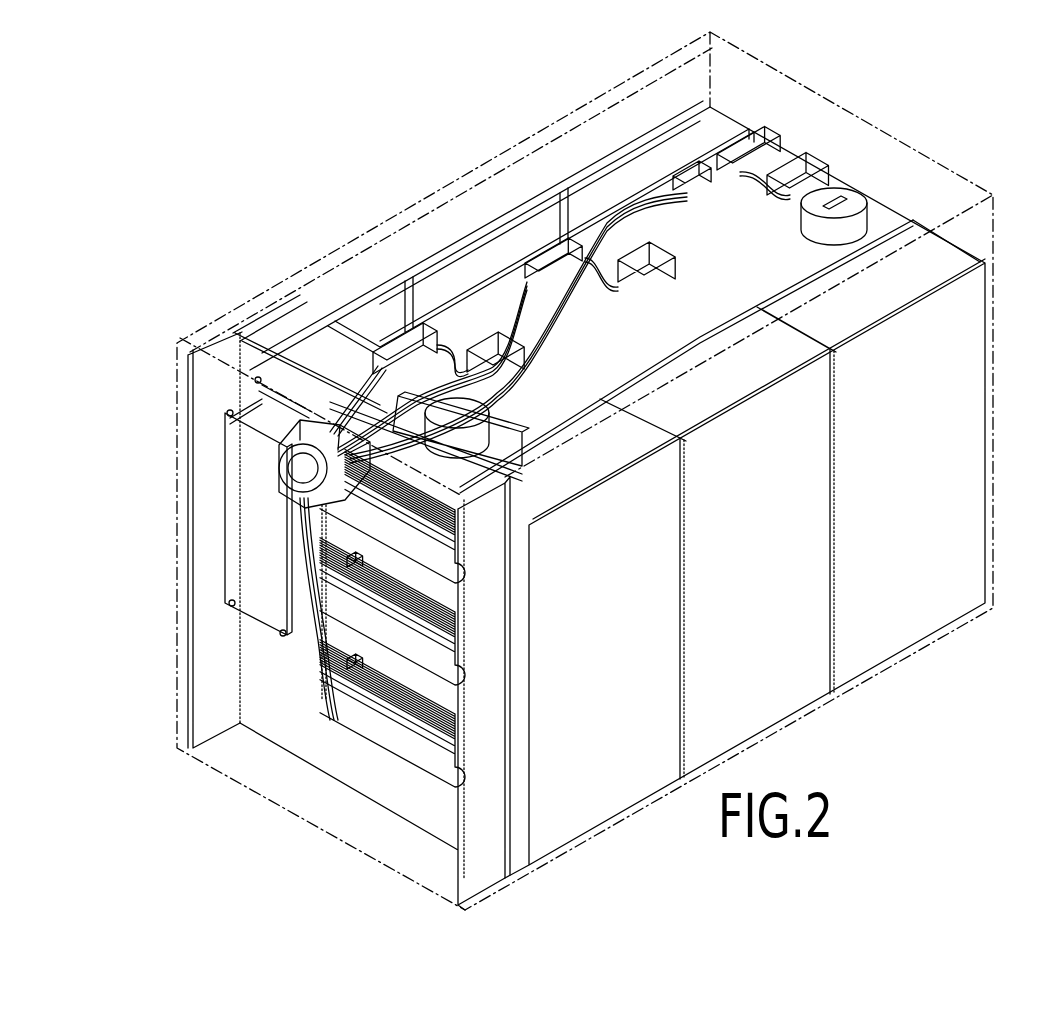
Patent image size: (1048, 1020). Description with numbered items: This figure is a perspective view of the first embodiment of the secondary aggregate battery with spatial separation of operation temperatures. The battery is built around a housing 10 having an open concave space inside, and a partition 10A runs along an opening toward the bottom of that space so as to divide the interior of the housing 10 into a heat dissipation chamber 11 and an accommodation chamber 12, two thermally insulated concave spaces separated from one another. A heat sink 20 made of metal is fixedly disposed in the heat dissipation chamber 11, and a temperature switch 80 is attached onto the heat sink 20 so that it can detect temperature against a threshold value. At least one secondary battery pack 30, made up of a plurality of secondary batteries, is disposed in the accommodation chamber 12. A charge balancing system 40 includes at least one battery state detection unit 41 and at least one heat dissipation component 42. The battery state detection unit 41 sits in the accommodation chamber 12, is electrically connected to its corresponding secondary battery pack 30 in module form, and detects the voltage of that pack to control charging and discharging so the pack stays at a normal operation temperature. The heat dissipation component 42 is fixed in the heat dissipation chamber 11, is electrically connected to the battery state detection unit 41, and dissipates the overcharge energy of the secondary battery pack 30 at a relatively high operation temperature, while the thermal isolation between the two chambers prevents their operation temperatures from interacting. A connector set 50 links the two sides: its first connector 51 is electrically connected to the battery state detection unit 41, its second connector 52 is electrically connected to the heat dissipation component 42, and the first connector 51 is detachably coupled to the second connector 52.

The housing 10 is at (410, 200).
The partition 10A is at (268, 310).
The heat dissipation chamber 11 is at (205, 340).
The accommodation chamber 12 is at (590, 162).
The heat sink 20 is at (222, 330).
The secondary battery pack 30 is at (380, 300).
The charge balancing system 40 is at (975, 112).
The battery state detection unit 41 is at (780, 130).
The heat dissipation component 42 is at (385, 726).
The connector set 50 is at (760, 242).
The first connector 51 is at (720, 177).
The second connector 52 is at (700, 196).
The temperature switch 80 is at (250, 515).